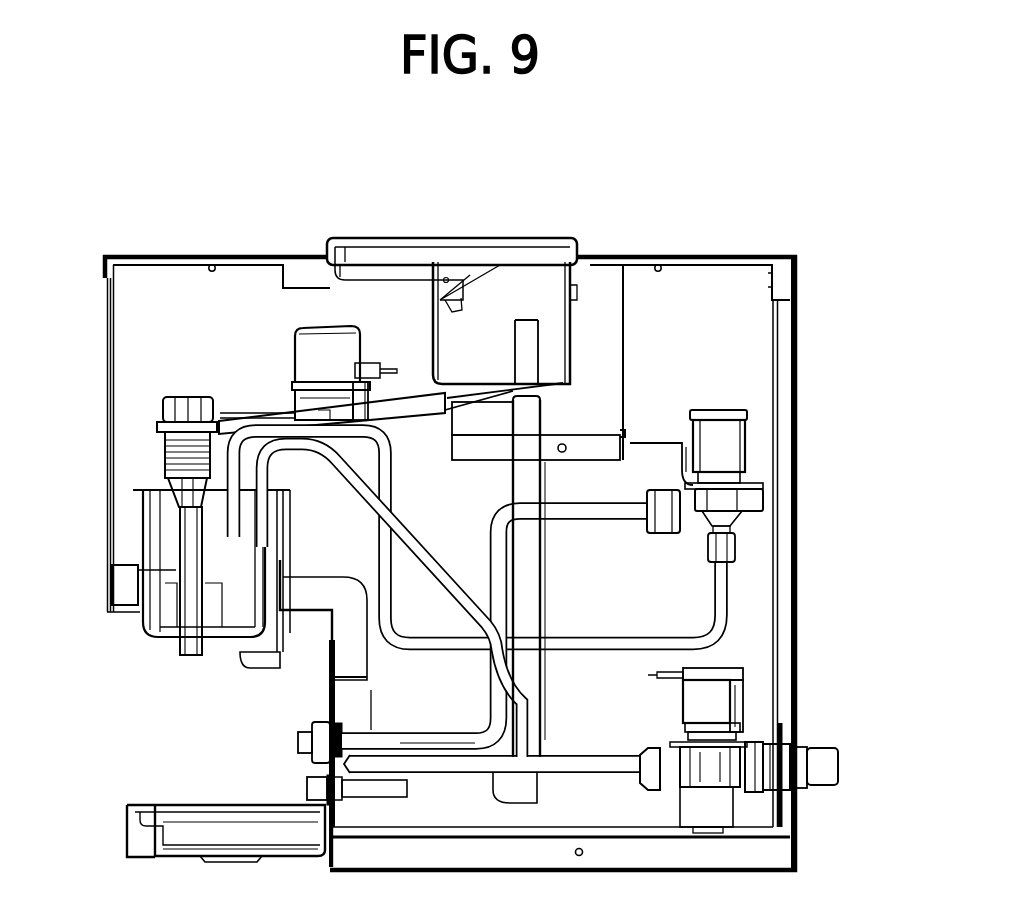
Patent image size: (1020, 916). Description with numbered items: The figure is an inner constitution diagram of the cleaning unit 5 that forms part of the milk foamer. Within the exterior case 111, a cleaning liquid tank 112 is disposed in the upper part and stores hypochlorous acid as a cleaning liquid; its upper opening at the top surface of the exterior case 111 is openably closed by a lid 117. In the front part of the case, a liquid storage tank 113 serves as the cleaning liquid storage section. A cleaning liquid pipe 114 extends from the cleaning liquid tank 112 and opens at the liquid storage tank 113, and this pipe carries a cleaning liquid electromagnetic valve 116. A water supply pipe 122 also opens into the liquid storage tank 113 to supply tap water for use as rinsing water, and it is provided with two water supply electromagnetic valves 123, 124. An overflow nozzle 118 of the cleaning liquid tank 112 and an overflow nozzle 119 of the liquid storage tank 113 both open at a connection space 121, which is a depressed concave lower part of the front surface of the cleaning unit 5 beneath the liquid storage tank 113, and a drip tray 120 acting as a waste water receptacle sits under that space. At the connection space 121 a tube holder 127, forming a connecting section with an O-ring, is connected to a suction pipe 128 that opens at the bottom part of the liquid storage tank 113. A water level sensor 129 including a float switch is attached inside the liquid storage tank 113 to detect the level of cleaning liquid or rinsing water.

The cleaning unit 5 is at (826, 256).
The exterior case 111 is at (710, 258).
The cleaning liquid tank 112 is at (573, 313).
The liquid storage tank 113 is at (143, 540).
The cleaning liquid pipe 114 is at (413, 393).
The cleaning liquid electromagnetic valve 116 is at (295, 357).
The lid 117 is at (520, 238).
The overflow nozzle 118 is at (540, 573).
The overflow nozzle 119 is at (178, 652).
The drip tray 120 is at (211, 810).
The connection space 121 is at (128, 738).
The water supply pipe 122 is at (730, 600).
The water supply electromagnetic valve 123 is at (735, 700).
The water supply electromagnetic valve 124 is at (733, 410).
The tube holder 127 is at (297, 737).
The suction pipe 128 is at (423, 560).
The water level sensor 129 is at (165, 398).